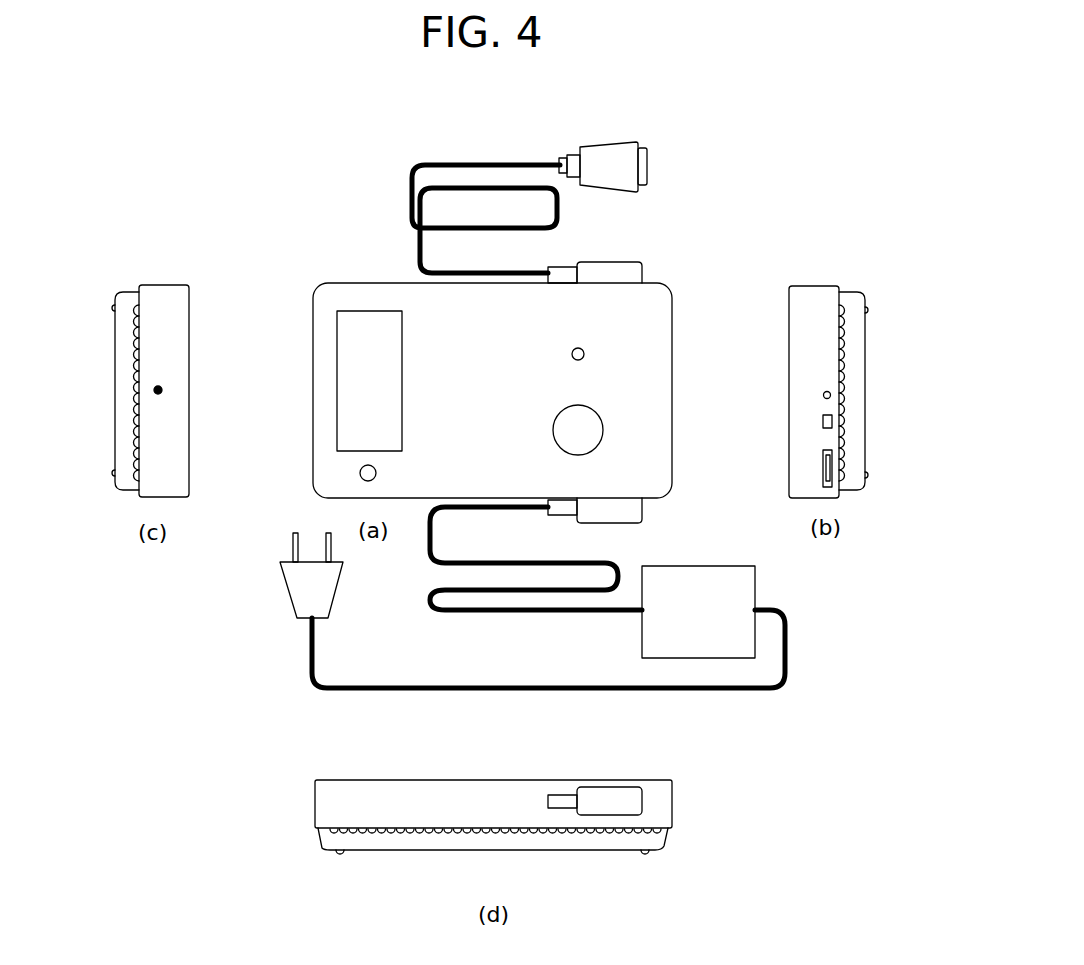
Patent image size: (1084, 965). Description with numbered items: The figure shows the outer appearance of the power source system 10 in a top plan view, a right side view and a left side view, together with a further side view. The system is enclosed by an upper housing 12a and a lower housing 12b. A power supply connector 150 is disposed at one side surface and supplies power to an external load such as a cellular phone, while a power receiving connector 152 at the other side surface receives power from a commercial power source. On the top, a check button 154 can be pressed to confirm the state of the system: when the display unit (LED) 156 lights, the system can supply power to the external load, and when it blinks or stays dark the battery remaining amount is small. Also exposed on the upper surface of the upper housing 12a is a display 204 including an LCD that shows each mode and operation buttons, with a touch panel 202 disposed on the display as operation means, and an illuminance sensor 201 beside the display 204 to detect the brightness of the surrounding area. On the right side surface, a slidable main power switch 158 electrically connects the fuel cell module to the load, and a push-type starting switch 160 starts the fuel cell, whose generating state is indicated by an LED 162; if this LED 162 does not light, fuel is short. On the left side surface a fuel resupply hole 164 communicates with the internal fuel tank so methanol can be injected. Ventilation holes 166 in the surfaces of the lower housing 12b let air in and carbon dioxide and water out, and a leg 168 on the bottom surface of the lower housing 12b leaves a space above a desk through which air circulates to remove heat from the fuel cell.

The power source system 10 is at (767, 117).
The upper housing 12a is at (315, 299).
The lower housing 12b is at (862, 345).
The power supply connector 150 is at (610, 162).
The power receiving connector 152 is at (300, 592).
The check button 154 is at (563, 433).
The display unit (LED) 156 is at (572, 358).
The main power switch 158 is at (823, 455).
The starting switch 160 is at (823, 422).
The LED 162 is at (827, 390).
The fuel resupply hole 164 is at (158, 386).
The ventilation holes 166 is at (843, 296).
The leg 168 is at (318, 848).
The illuminance sensor 201 is at (360, 468).
The touch panel 202 is at (355, 392).
The display 204 is at (373, 311).